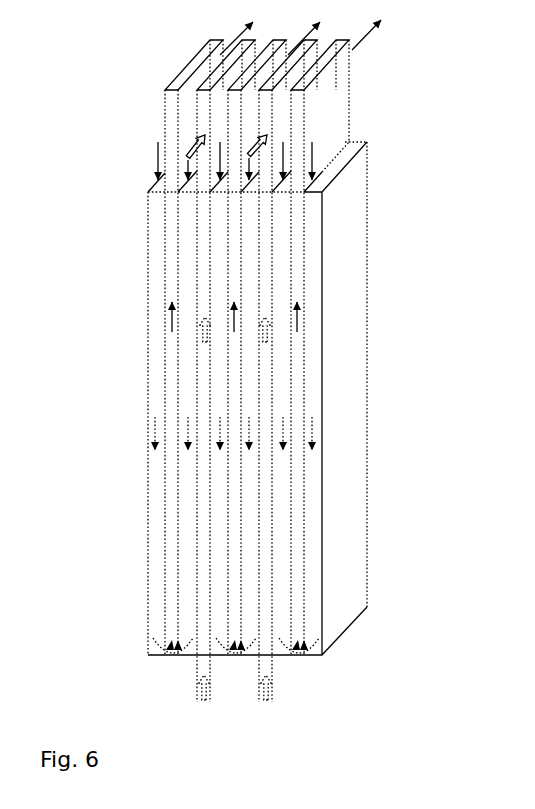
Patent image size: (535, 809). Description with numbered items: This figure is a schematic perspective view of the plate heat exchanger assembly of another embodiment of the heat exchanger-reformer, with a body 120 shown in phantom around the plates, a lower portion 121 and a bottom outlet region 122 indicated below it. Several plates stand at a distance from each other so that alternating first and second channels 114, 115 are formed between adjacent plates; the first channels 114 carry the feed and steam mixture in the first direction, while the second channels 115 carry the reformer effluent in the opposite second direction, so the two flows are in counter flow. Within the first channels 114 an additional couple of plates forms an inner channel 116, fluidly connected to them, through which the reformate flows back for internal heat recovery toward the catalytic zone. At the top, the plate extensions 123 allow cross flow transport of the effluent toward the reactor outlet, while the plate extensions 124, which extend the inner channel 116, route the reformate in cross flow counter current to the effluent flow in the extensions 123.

The first channels 114 is at (187, 370).
The second channels 115 is at (203, 488).
The additional inner channel 116 is at (172, 425).
The housing 120 is at (342, 253).
The plate bottom end 121 is at (163, 563).
The outlet 122 is at (197, 692).
The plate extensions 123 is at (197, 132).
The plate extensions 124 is at (323, 107).